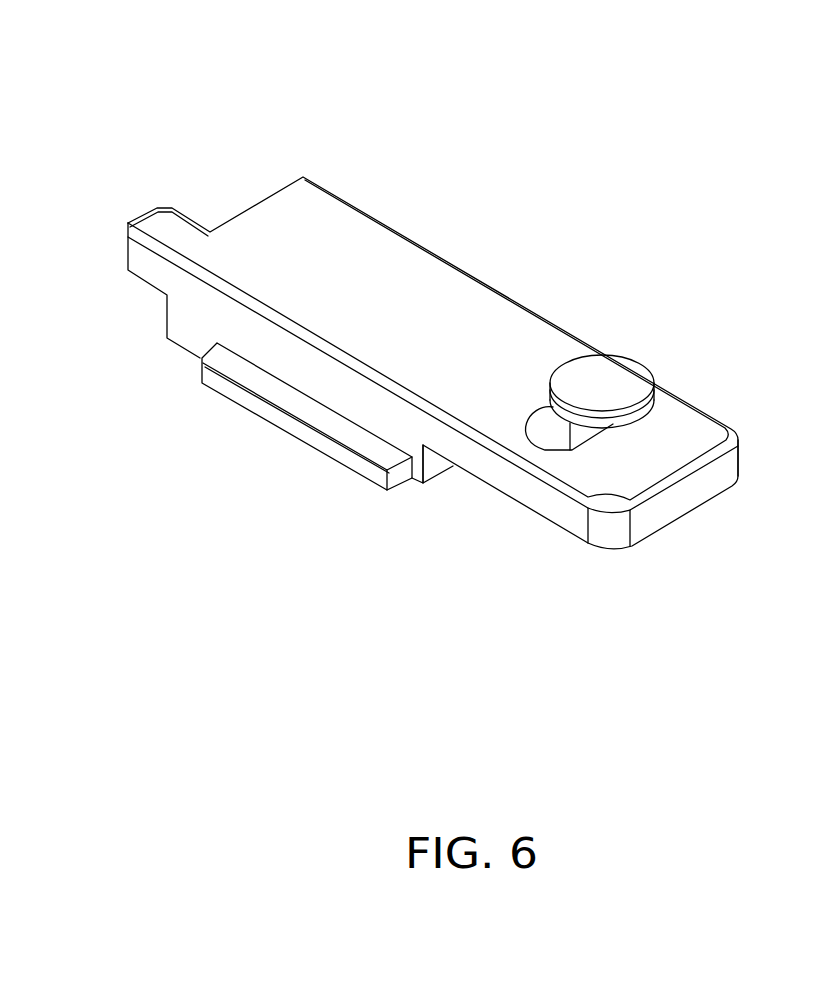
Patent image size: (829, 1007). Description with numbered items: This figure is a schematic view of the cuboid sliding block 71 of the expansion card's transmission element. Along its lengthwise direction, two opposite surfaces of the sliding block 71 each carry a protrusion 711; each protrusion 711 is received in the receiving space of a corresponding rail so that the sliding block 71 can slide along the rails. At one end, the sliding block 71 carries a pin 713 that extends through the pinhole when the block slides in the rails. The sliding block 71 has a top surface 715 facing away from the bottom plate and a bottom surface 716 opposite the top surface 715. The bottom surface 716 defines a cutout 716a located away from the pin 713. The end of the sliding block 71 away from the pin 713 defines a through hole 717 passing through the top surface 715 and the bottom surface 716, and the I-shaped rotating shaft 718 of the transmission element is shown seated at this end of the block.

The sliding block 71 is at (407, 305).
The protrusion 711 is at (200, 357).
The pin 713 is at (138, 262).
The top surface 715 is at (413, 292).
The bottom surface 716 is at (426, 490).
The cutout 716a is at (537, 523).
The through hole 717 is at (550, 435).
The I-shaped rotating shaft 718 is at (620, 380).